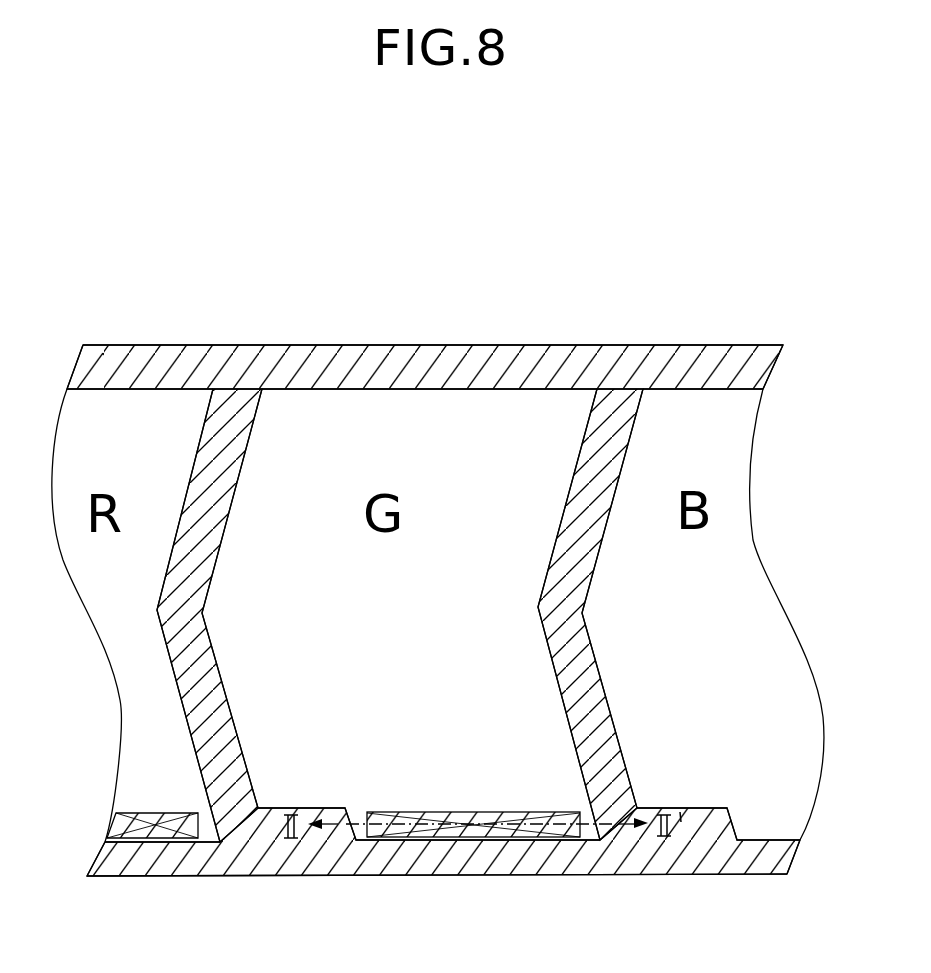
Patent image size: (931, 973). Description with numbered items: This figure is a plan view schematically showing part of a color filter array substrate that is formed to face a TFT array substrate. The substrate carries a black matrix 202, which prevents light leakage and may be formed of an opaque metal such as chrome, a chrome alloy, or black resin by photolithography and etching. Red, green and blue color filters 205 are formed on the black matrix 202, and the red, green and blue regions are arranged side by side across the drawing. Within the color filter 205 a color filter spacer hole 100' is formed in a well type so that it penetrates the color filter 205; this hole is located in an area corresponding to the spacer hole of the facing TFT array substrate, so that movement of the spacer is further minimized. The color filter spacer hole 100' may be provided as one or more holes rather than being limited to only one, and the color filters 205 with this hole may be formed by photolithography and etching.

The black matrix 202 is at (263, 858).
The color filter spacer hole 100' is at (473, 875).
The color filter 205 is at (527, 773).